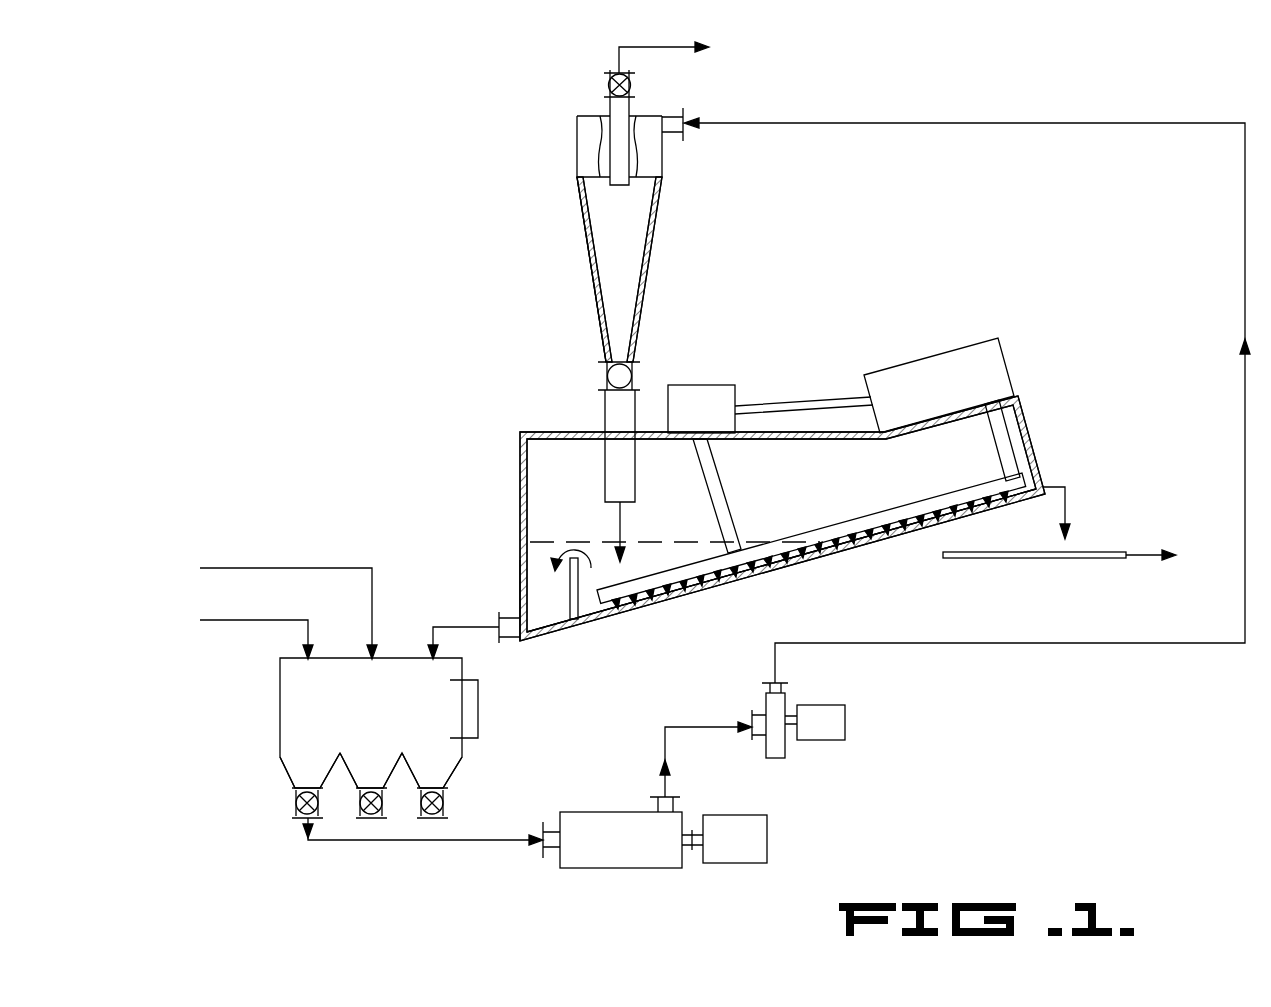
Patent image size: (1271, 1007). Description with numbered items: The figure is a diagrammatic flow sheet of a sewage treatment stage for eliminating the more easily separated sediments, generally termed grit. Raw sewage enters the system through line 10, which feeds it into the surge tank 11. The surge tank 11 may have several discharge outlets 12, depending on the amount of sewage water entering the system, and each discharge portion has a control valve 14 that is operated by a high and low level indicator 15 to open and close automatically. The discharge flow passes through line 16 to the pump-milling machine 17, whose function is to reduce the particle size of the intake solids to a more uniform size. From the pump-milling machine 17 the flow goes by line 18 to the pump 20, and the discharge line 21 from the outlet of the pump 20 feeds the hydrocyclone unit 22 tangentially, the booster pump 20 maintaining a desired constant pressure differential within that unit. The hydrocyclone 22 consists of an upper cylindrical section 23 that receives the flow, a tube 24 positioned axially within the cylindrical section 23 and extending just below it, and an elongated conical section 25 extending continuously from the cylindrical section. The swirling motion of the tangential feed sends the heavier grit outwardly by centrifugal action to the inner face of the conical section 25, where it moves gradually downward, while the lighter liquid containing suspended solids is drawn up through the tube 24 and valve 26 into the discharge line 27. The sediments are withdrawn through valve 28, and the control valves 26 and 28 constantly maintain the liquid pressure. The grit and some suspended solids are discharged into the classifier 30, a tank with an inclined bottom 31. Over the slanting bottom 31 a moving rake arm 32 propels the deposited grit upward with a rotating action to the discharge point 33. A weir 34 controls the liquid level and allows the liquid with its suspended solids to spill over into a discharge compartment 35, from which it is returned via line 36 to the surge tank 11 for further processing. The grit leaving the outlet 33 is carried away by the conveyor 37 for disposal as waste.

The line 10 is at (300, 568).
The surge tank 11 is at (362, 704).
The discharge outlets 12 is at (300, 777).
The control valve 14 is at (297, 806).
The high and low level indicator 15 is at (470, 682).
The line 16 is at (472, 840).
The pump-milling machine 17 is at (618, 868).
The line 18 is at (711, 727).
The pump 20 is at (776, 758).
The discharge line 21 is at (963, 123).
The hydrocyclone unit 22 is at (656, 222).
The upper cylindrical section 23 is at (577, 153).
The tube 24 is at (650, 117).
The elongated conical section 25 is at (593, 291).
The valve 26 is at (608, 85).
The discharge line 27 is at (675, 52).
The valve 28 is at (632, 375).
The classifier 30 is at (520, 485).
The inclined bottom 31 is at (768, 580).
The moving rake arm 32 is at (845, 550).
The discharge point 33 is at (1047, 485).
The weir 34 is at (572, 618).
The discharge compartment 35 is at (520, 590).
The line 36 is at (433, 635).
The conveyor 37 is at (1098, 560).